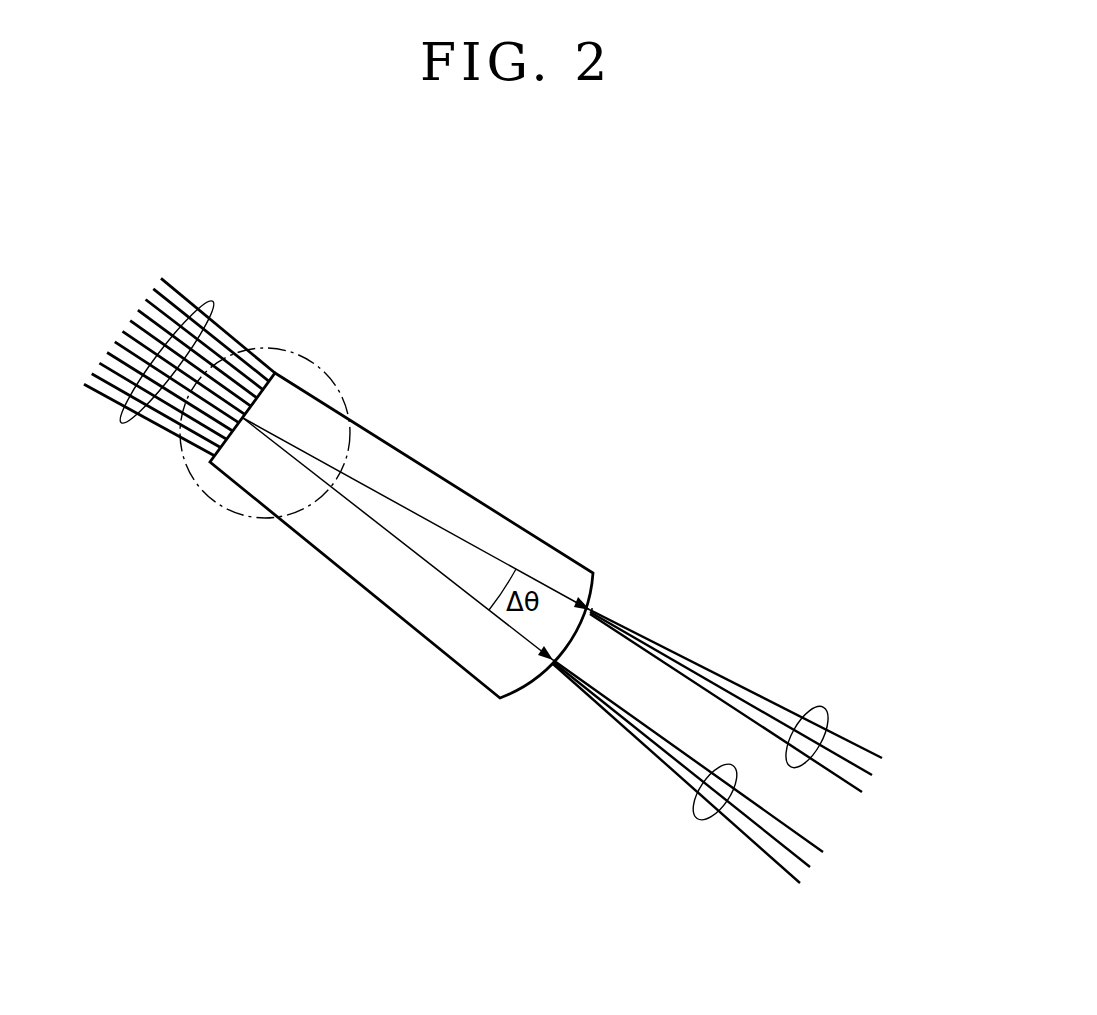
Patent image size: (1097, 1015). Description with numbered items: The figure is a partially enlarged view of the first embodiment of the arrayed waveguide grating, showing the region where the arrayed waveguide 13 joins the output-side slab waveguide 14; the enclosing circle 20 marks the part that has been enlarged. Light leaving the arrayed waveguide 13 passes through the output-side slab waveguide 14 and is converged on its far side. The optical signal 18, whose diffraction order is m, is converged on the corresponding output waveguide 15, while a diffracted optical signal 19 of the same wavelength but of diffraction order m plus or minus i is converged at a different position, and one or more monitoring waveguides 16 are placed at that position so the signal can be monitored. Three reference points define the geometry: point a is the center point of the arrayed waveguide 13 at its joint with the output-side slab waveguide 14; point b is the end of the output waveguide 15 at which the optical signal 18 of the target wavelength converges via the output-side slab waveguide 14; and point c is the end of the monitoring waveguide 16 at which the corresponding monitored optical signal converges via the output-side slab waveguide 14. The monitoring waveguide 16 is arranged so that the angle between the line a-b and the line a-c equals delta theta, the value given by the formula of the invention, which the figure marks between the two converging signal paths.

The arrayed waveguide 13 is at (207, 307).
The output-side slab waveguide 14 is at (447, 480).
The output waveguide 15 is at (697, 820).
The monitoring waveguide 16 is at (823, 707).
The optical signal 18 is at (490, 610).
The diffracted optical signal 19 is at (537, 583).
The enlarged region of fiber end 20 is at (215, 502).
The center point of the arrayed waveguide a is at (243, 418).
The end of the output waveguide b is at (557, 662).
The end of the monitoring waveguide c is at (598, 606).